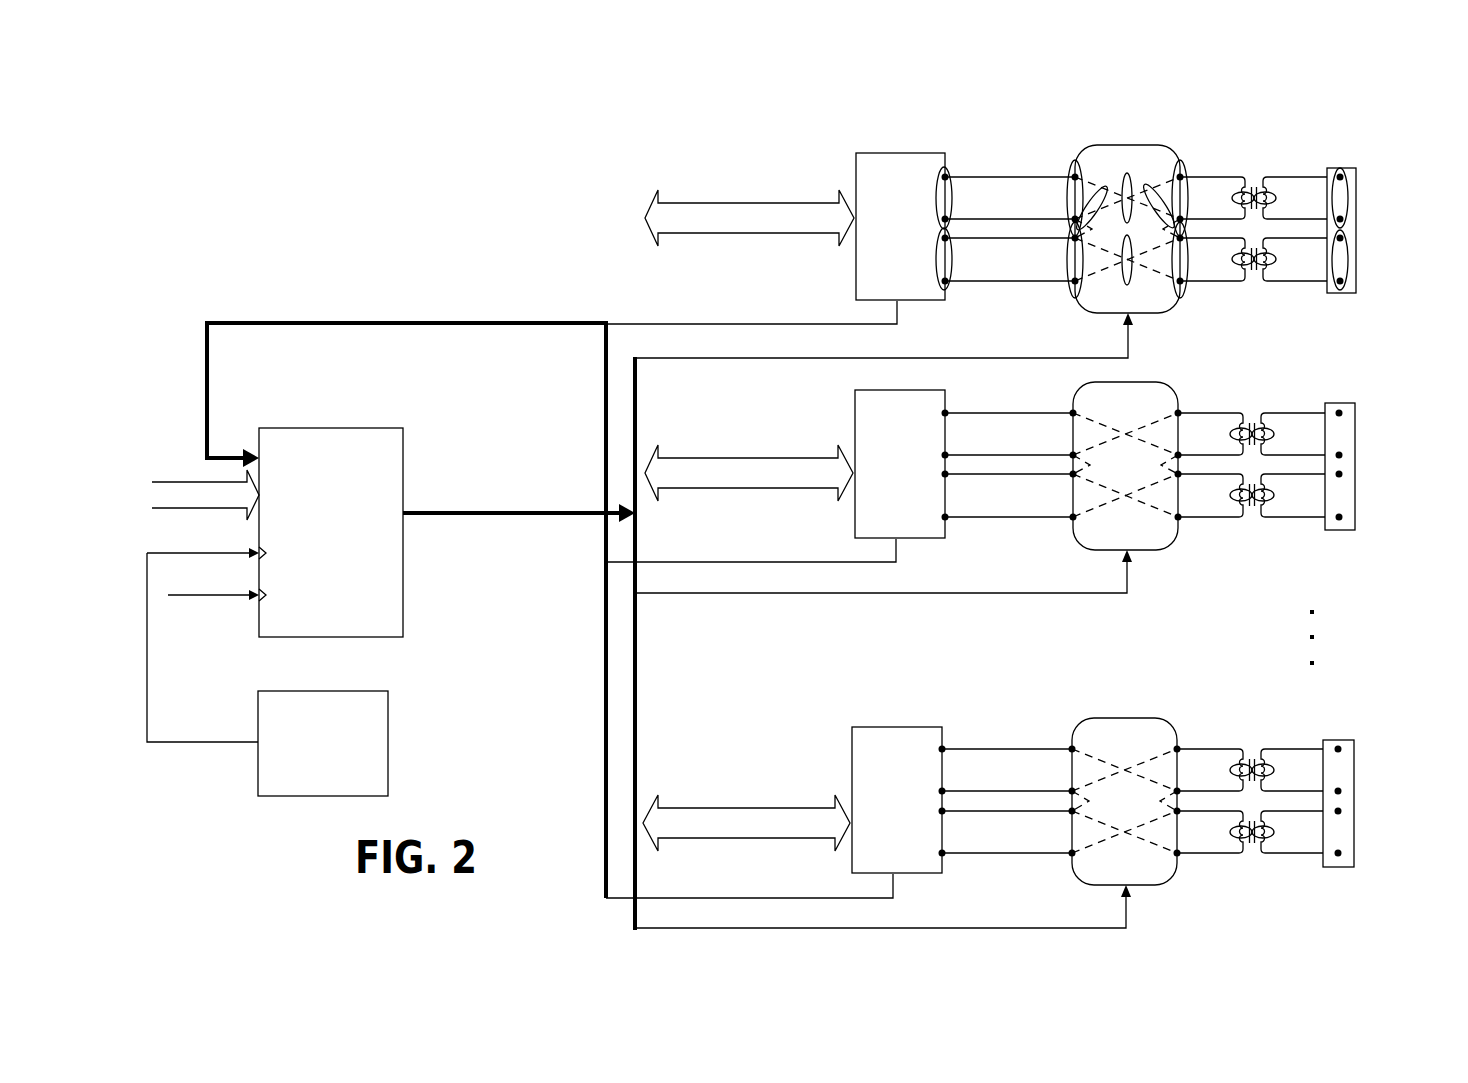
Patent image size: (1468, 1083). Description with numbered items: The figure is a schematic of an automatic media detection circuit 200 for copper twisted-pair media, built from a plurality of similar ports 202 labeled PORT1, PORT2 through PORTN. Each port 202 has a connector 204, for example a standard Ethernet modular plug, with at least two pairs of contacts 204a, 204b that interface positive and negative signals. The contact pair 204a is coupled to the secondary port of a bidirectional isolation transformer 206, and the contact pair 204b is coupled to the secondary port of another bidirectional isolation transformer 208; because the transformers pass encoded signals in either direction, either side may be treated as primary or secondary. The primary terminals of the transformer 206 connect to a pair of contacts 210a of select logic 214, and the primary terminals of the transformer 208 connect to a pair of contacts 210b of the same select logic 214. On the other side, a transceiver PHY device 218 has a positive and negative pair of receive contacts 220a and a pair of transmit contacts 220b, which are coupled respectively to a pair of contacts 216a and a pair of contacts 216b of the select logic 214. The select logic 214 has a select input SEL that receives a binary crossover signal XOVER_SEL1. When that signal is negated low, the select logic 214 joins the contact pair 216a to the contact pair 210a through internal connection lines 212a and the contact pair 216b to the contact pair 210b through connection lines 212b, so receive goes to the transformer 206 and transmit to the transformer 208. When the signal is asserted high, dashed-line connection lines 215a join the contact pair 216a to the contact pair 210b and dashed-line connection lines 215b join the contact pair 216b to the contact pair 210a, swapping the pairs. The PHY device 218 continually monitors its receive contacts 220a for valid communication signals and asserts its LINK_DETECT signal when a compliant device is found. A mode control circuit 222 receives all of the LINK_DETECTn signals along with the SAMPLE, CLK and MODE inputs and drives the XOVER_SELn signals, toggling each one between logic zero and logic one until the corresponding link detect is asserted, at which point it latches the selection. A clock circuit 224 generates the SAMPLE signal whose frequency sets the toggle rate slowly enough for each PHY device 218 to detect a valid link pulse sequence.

The automatic media detection circuit 200 is at (582, 226).
The port 202 is at (1266, 134).
The connector 204 is at (1367, 496).
The pair of contacts 204a is at (1349, 198).
The pair of contacts 204b is at (1349, 262).
The bidirectional isolation transformer 206 is at (1257, 188).
The bidirectional isolation transformer 208 is at (1257, 267).
The pair of contacts 210a is at (1188, 188).
The pair of contacts 210b is at (1188, 268).
The internal connection lines 212a is at (1127, 173).
The connection lines 212b is at (1133, 279).
The select logic 214 is at (1125, 482).
The dashed-line connection lines 215a is at (1105, 187).
The dashed-line connection lines 215b is at (1150, 186).
The pair of contacts 216a is at (1067, 196).
The pair of contacts 216b is at (1070, 264).
The transceiver PHY device 218 is at (921, 256).
The receive (RX) contacts 220a is at (936, 191).
The transmit (TX) contacts 220b is at (951, 290).
The mode control circuit 222 is at (352, 592).
The clock circuit 224 is at (344, 789).